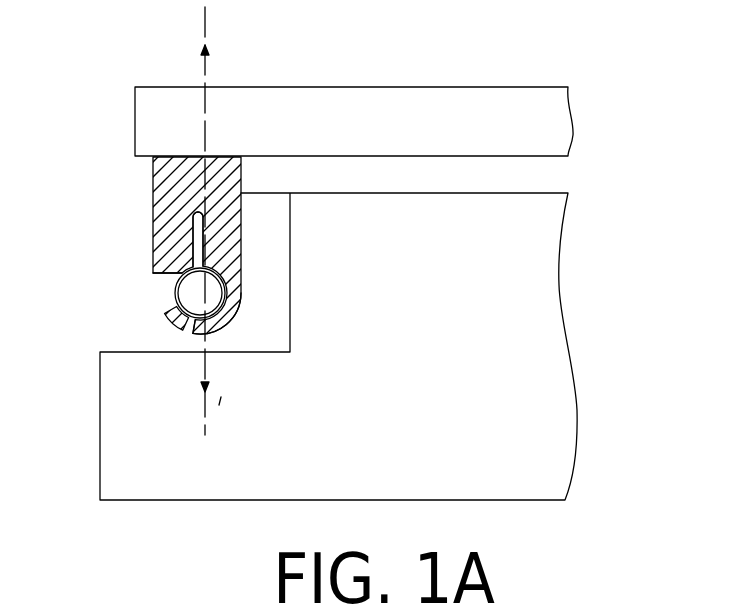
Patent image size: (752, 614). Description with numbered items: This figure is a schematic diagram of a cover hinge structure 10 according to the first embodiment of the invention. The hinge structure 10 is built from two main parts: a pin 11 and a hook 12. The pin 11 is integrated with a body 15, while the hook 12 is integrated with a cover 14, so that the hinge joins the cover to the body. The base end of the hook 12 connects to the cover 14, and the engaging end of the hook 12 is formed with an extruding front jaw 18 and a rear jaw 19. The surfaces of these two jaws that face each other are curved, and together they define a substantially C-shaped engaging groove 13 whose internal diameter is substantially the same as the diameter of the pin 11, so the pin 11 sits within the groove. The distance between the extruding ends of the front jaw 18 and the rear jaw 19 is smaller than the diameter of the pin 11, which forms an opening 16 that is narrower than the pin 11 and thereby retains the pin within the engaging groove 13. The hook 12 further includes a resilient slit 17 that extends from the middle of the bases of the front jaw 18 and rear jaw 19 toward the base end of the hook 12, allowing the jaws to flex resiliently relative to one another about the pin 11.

The hinge structure 10 is at (692, 102).
The pin 11 is at (162, 233).
The hook 12 is at (153, 172).
The engaging groove 13 is at (228, 293).
The cover 14 is at (462, 95).
The body 15 is at (105, 450).
The opening 16 is at (198, 293).
The resilient slit 17 is at (197, 238).
The front jaw 18 is at (200, 322).
The rear jaw 19 is at (163, 275).